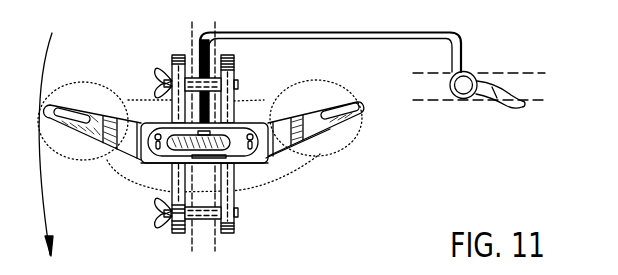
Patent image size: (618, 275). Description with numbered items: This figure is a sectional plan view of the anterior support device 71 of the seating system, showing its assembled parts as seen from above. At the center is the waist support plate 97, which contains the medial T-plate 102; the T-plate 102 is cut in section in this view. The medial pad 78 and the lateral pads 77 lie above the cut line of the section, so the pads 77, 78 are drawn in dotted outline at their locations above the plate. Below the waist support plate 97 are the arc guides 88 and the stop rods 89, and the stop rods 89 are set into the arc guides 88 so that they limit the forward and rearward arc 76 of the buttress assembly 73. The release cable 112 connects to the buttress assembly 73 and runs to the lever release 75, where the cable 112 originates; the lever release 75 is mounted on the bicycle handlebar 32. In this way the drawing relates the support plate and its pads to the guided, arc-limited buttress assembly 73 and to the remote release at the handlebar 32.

The anterior support device 71 is at (480, 195).
The buttress assembly 73 is at (397, 145).
The lever release 75 is at (516, 96).
The forward and rearward arc 76 is at (46, 75).
The lateral pads 77 is at (101, 82).
The medial pad 78 is at (270, 100).
The arc guides 88 is at (172, 191).
The stop rods 89 is at (212, 62).
The waist support plate 97 is at (330, 130).
The medial T-plate 102 is at (262, 166).
The release cable 112 is at (405, 38).
The handlebar 32 is at (444, 73).